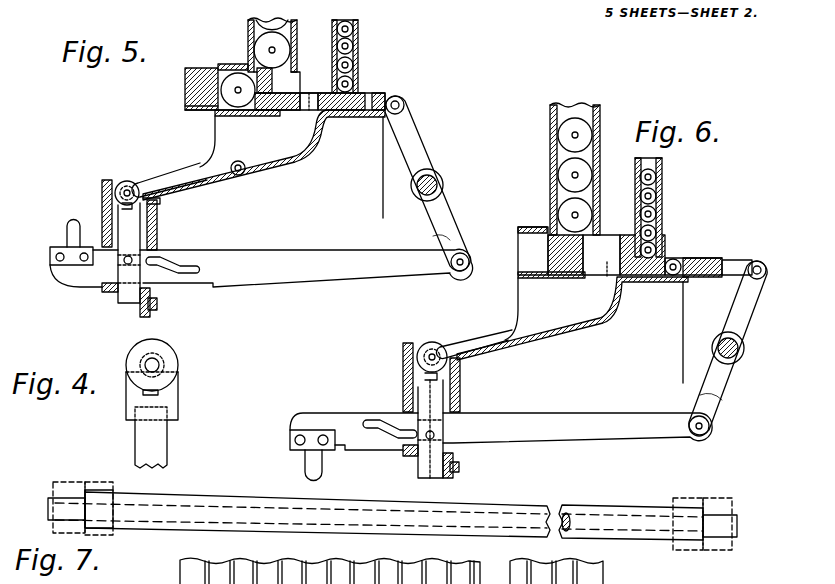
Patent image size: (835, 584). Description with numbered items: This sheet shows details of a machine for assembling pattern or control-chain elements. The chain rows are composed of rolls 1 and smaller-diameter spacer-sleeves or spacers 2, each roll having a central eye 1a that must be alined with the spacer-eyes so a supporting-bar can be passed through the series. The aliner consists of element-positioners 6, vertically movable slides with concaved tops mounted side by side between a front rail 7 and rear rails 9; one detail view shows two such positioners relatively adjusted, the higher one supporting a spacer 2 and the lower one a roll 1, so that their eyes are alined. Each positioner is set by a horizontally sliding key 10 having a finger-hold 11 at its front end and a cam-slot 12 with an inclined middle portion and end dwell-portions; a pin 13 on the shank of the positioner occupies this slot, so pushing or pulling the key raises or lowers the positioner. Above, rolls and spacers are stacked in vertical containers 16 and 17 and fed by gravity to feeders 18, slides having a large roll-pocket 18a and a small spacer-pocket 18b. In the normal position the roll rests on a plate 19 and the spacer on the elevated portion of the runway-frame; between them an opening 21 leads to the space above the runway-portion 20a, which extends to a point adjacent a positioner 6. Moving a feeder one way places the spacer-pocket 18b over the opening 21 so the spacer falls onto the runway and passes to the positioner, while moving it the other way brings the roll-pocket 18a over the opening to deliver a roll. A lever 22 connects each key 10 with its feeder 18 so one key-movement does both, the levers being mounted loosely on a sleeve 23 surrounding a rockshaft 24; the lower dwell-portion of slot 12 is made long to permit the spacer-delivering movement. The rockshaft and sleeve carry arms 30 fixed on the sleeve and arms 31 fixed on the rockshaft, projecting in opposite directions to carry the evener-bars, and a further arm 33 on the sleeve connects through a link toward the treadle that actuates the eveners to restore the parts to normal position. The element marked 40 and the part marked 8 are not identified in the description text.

In FIG. 5, the roll 1 is at (282, 50).
In FIG. 6, the roll 1 is at (560, 172).
In FIG. 4, the roll 1 is at (178, 356).
In FIG. 4, the roll-eye 1a is at (157, 361).
In FIG. 5, the spacer-sleeve 2 is at (238, 160).
In FIG. 6, the spacer-sleeve 2 is at (663, 184).
In FIG. 4, the spacer-sleeve 2 is at (141, 358).
In FIG. 5, the element-positioner 6 is at (143, 214).
In FIG. 6, the element-positioner 6 is at (453, 400).
In FIG. 4, the element-positioner 6 is at (178, 380).
In FIG. 5, the front rail 7 is at (102, 193).
In FIG. 6, the front rail 7 is at (403, 362).
In FIG. 5, the bushing 8 is at (108, 295).
In FIG. 6, the bushing 8 is at (405, 450).
In FIG. 5, the rear rail 9 is at (157, 240).
In FIG. 6, the rear rail 9 is at (462, 378).
In FIG. 5, the key 10 is at (65, 278).
In FIG. 6, the key 10 is at (318, 413).
In FIG. 5, the finger-hold 11 is at (67, 229).
In FIG. 6, the finger-hold 11 is at (306, 470).
In FIG. 5, the cam-slot 12 is at (165, 262).
In FIG. 6, the cam-slot 12 is at (383, 428).
In FIG. 5, the pin 13 is at (124, 263).
In FIG. 6, the pin 13 is at (438, 438).
In FIG. 5, the roll container 16 is at (248, 22).
In FIG. 6, the roll container 16 is at (550, 195).
In FIG. 7, the roll container 16 is at (180, 573).
In FIG. 5, the spacer container 17 is at (358, 43).
In FIG. 6, the spacer container 17 is at (663, 168).
In FIG. 5, the feeder 18 is at (185, 95).
In FIG. 6, the feeder 18 is at (548, 255).
In FIG. 5, the roll-pocket 18a is at (212, 110).
In FIG. 6, the roll-pocket 18a is at (597, 266).
In FIG. 5, the spacer-pocket 18b is at (318, 140).
In FIG. 5, the plate 19 is at (222, 114).
In FIG. 6, the plate 19 is at (520, 277).
In FIG. 5, the runway-portion 20a is at (205, 149).
In FIG. 6, the runway-portion 20a is at (512, 338).
In FIG. 5, the opening 21 is at (286, 112).
In FIG. 6, the opening 21 is at (605, 279).
In FIG. 5, the lever 22 is at (435, 223).
In FIG. 6, the lever 22 is at (737, 307).
In FIG. 7, the sleeve 23 is at (537, 494).
In FIG. 7, the rockshaft 24 is at (48, 506).
In FIG. 7, the arm 30 is at (688, 498).
In FIG. 7, the arm 31 is at (68, 482).
In FIG. 7, the arm 33 is at (105, 482).
In FIG. 5, the arm 40 is at (162, 177).
In FIG. 6, the arm 40 is at (457, 340).